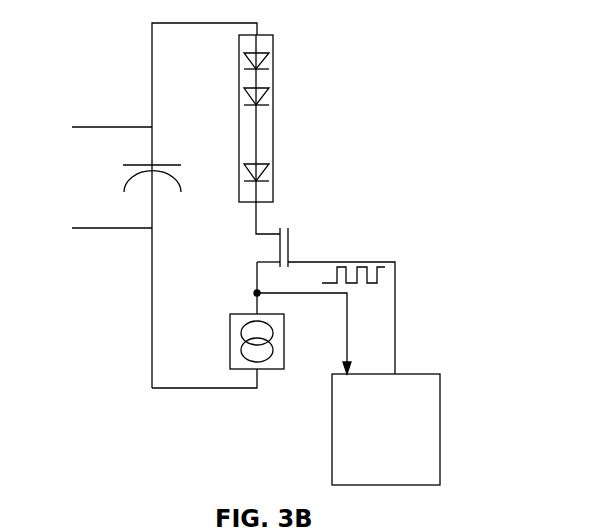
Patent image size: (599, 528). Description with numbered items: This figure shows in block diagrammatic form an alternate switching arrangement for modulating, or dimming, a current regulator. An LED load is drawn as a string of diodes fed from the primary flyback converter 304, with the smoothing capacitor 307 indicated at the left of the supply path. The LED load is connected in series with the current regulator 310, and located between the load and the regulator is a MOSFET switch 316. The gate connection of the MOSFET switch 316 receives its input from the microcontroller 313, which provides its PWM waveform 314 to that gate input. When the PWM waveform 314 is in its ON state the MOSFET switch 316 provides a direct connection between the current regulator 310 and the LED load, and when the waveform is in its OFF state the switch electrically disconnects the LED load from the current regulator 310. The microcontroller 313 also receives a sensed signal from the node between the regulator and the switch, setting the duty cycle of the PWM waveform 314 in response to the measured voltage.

The primary flyback converter 304 is at (273, 70).
The smoothing capacitor 307 is at (130, 161).
The current regulator 310 is at (230, 357).
The microcontroller 313 is at (440, 400).
The PWM waveform 314 is at (385, 278).
The MOSFET switch 316 is at (292, 238).